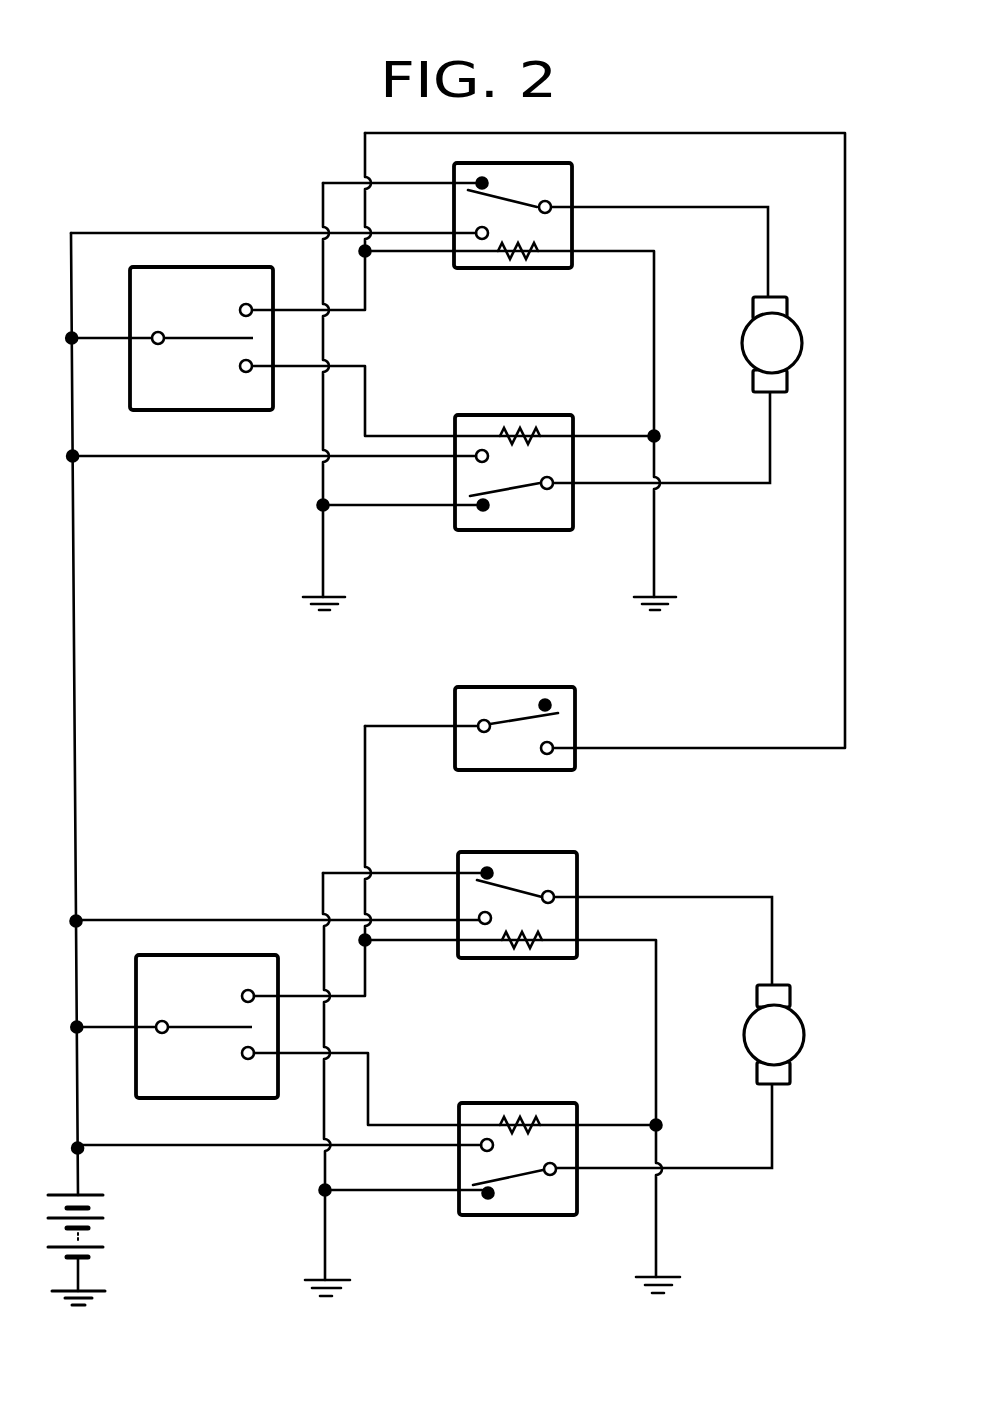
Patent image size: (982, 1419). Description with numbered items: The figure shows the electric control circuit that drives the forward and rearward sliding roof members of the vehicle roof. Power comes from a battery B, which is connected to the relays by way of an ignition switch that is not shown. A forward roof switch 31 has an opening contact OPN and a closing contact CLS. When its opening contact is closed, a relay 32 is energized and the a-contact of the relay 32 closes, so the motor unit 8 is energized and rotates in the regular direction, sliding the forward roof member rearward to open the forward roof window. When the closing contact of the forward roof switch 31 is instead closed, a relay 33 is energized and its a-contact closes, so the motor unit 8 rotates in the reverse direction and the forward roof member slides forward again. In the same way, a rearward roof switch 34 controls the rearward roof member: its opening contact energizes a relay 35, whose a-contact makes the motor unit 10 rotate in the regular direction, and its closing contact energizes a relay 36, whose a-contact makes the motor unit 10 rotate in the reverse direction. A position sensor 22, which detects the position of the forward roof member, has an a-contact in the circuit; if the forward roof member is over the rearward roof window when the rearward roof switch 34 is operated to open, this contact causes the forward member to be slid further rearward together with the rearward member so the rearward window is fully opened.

The motor unit 8 is at (747, 355).
The motor unit 10 is at (806, 1044).
The position sensor 22 is at (532, 687).
The forward roof switch 31 is at (243, 267).
The relay 32 is at (574, 183).
The relay 33 is at (552, 415).
The rearward roof switch 34 is at (175, 955).
The relay 35 is at (538, 852).
The relay 36 is at (570, 1103).
The battery B is at (108, 1230).